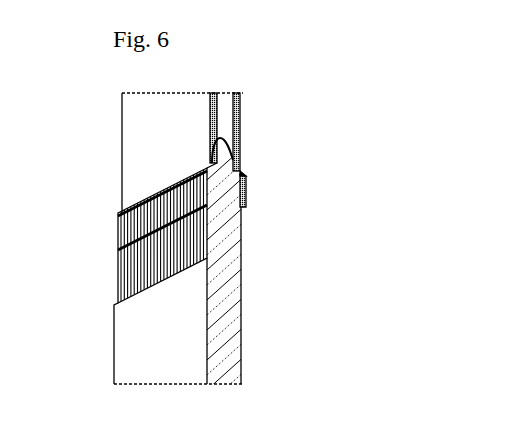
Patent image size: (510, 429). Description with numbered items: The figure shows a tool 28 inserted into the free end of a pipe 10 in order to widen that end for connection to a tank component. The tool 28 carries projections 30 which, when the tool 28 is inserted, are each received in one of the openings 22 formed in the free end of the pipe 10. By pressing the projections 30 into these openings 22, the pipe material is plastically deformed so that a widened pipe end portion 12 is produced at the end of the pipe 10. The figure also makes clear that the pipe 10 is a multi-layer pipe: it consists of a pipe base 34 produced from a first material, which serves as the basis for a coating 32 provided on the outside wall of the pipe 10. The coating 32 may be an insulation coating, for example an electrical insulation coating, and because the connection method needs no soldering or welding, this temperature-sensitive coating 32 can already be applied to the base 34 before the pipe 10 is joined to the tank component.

The pipe 10 is at (122, 131).
The widened pipe end portion 12 is at (118, 250).
The openings 22 is at (246, 207).
The tool 28 is at (125, 345).
The projections 30 is at (118, 273).
The coating 32 is at (242, 152).
The pipe base 34 is at (242, 122).